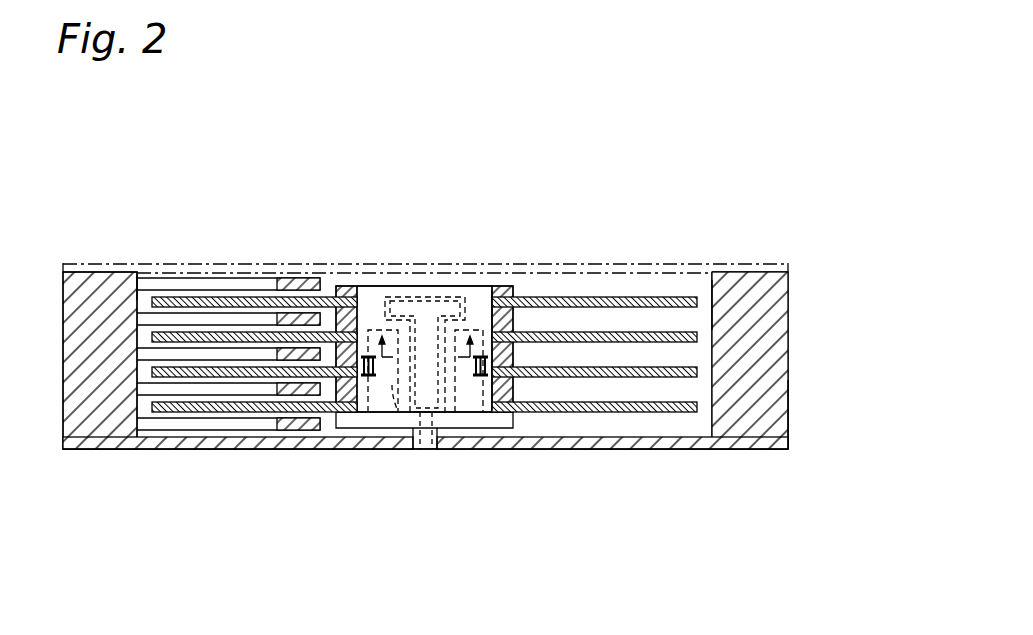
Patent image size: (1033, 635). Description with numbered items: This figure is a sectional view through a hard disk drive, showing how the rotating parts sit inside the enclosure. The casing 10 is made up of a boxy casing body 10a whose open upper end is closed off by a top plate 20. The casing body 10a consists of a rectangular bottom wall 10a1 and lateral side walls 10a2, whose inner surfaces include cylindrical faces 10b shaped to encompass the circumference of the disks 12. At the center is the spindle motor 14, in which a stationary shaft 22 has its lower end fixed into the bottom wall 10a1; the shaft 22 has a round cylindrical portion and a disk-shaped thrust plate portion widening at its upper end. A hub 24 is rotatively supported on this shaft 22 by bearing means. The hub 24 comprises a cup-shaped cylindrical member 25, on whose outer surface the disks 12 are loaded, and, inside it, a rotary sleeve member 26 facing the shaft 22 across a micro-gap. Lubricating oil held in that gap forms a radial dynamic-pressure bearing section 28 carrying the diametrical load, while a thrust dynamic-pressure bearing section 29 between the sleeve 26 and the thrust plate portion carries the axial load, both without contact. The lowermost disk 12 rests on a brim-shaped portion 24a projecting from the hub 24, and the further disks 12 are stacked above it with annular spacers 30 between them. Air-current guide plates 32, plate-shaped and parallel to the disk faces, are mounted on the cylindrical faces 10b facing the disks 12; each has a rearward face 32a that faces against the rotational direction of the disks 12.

The casing 10 is at (792, 265).
The casing body 10a is at (800, 357).
The bottom wall 10a1 is at (477, 444).
The lateral side walls 10a2 is at (790, 403).
The cylindrical faces 10b is at (139, 279).
The disks 12 is at (232, 300).
The spindle motor 14 is at (457, 277).
The top plate 20 is at (620, 264).
The stationary shaft 22 is at (432, 450).
The hub 24 is at (350, 287).
The brim-shaped portion 24a is at (505, 430).
The cup-shaped cylindrical member 25 is at (486, 305).
The rotary sleeve member 26 is at (386, 332).
The radial dynamic-pressure bearing section 28 is at (398, 412).
The thrust dynamic-pressure bearing section 29 is at (426, 297).
The annular spacers 30 is at (515, 322).
The air-current guide plates 32 is at (192, 278).
The rearward face 32a is at (318, 283).